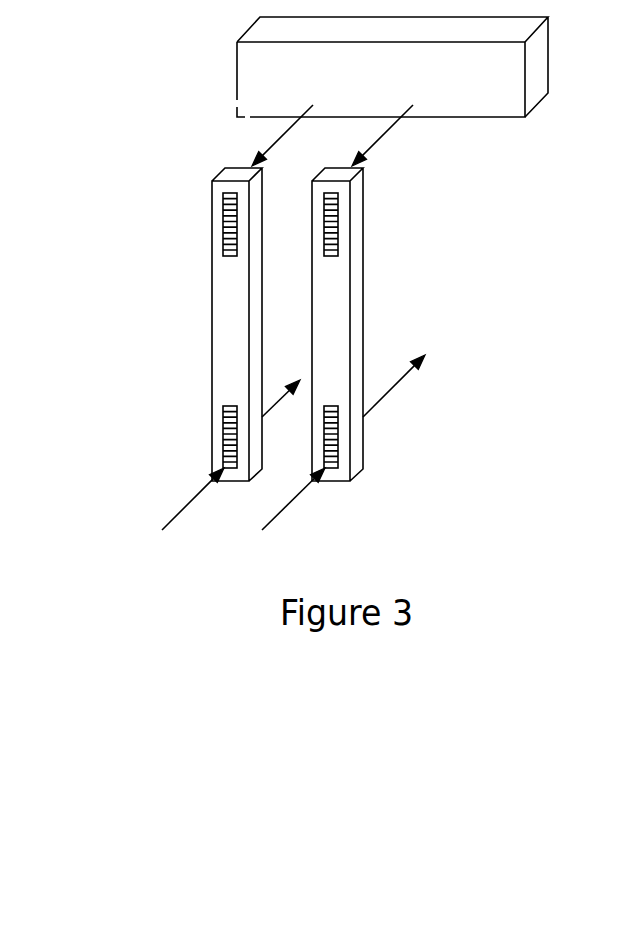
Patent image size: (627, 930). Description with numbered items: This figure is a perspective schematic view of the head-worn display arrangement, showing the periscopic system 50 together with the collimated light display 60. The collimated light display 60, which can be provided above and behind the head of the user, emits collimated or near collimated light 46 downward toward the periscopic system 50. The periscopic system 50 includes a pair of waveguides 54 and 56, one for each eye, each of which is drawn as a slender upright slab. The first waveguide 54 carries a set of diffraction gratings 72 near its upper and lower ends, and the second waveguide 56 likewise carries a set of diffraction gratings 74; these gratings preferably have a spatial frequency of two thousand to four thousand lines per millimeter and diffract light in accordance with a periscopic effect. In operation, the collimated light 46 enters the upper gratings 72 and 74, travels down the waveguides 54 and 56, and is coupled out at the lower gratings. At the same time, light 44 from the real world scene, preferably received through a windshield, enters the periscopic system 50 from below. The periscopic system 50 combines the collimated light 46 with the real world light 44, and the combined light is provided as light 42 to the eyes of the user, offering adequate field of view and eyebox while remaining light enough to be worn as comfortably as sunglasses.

The collimated light display 60 is at (237, 54).
The collimated light 46 is at (272, 142).
The first waveguide 54 is at (212, 233).
The second waveguide 56 is at (363, 352).
The diffraction gratings 72 is at (237, 242).
The diffraction gratings 74 is at (338, 218).
The light from real world scene 44 is at (177, 517).
The combined light 42 is at (372, 407).
The periscopic system 50 is at (160, 377).